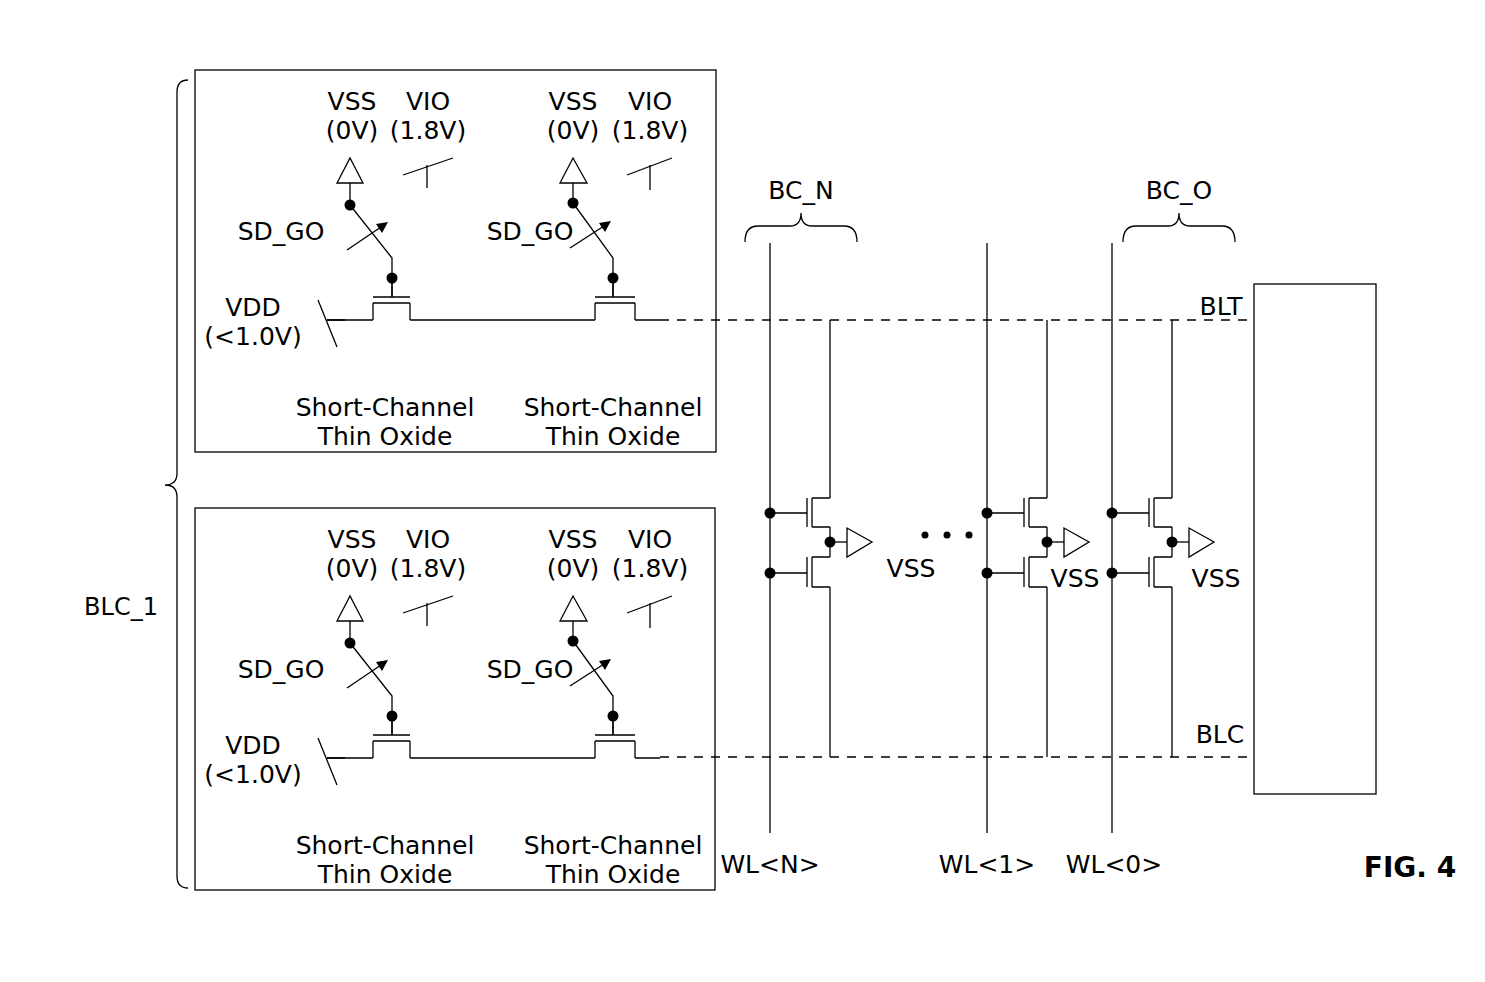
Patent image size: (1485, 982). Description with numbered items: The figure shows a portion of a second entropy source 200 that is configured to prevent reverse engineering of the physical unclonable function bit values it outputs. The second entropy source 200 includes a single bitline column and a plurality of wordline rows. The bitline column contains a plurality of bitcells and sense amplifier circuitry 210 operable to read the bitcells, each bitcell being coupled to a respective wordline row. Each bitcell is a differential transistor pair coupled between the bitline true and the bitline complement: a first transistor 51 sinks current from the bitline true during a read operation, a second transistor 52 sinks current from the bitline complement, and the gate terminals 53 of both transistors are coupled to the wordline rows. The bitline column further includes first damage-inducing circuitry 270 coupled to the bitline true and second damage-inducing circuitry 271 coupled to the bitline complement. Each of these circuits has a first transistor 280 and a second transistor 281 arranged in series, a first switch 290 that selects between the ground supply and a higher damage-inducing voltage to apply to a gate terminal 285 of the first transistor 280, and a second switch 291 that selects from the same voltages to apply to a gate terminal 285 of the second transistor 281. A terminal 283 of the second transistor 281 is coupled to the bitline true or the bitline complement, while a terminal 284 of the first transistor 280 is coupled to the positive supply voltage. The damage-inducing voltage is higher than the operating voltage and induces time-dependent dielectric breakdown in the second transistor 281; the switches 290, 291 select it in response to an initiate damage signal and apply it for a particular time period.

The second entropy source 200 is at (186, 40).
The first damage-inducing circuitry 270 is at (647, 70).
The second damage-inducing circuitry 271 is at (650, 890).
The first transistor 280 is at (390, 307).
The second transistor 281 is at (615, 307).
The terminal of the second transistor 283 is at (703, 318).
The terminal of the first transistor 284 is at (353, 320).
The gate terminal 285 is at (397, 290).
The first switch 290 is at (387, 240).
The second switch 291 is at (608, 243).
The first transistor 51 is at (815, 512).
The second transistor 52 is at (815, 575).
The gate terminals 53 is at (783, 508).
The sense amplifier circuitry 210 is at (1313, 794).